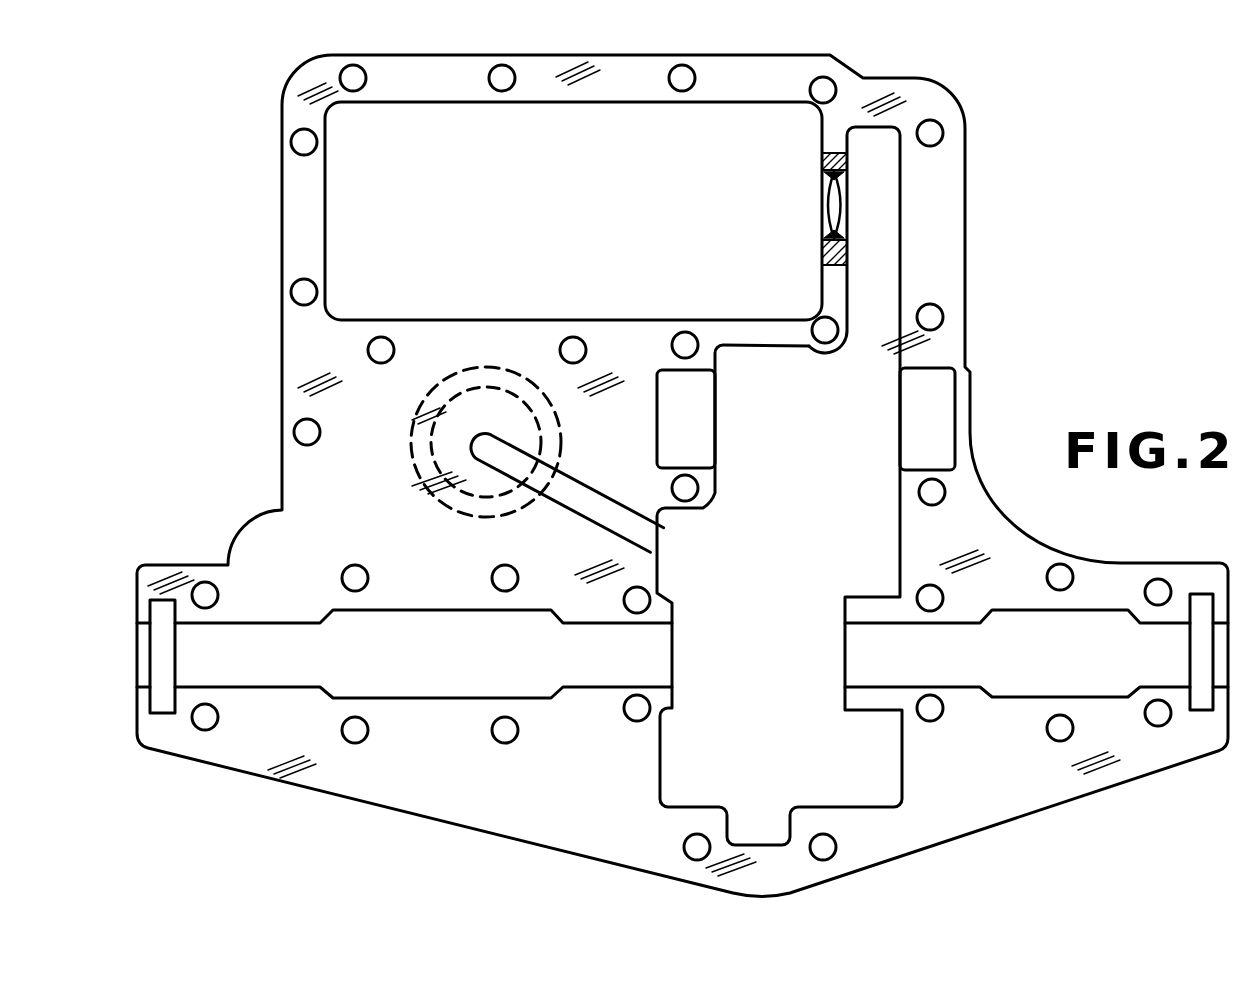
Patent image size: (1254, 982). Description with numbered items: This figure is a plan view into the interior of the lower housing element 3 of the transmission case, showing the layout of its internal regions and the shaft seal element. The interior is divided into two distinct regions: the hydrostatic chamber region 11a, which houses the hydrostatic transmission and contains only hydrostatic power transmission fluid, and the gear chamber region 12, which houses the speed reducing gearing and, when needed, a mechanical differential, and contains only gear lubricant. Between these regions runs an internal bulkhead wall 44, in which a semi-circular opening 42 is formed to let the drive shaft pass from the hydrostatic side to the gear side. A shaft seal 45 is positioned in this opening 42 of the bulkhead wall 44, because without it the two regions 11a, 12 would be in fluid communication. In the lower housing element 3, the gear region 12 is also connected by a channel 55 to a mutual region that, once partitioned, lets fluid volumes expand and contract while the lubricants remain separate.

The lower housing element 3 is at (286, 508).
The hydrostatic chamber region 11a is at (582, 222).
The gear chamber region 12 is at (812, 544).
The semi-circular opening 42 is at (848, 166).
The internal bulkhead wall 44 is at (832, 290).
The shaft seal 45 is at (822, 251).
The channel 55 is at (634, 521).